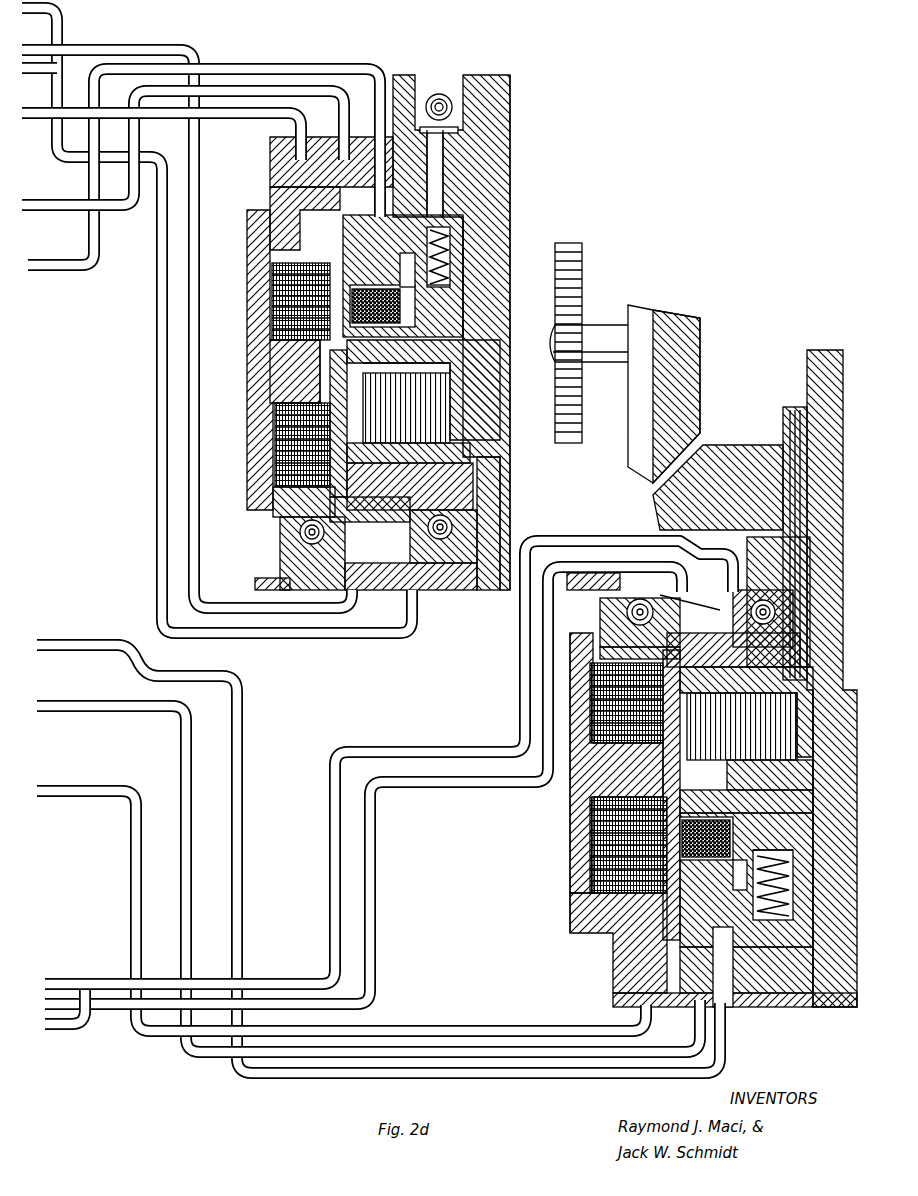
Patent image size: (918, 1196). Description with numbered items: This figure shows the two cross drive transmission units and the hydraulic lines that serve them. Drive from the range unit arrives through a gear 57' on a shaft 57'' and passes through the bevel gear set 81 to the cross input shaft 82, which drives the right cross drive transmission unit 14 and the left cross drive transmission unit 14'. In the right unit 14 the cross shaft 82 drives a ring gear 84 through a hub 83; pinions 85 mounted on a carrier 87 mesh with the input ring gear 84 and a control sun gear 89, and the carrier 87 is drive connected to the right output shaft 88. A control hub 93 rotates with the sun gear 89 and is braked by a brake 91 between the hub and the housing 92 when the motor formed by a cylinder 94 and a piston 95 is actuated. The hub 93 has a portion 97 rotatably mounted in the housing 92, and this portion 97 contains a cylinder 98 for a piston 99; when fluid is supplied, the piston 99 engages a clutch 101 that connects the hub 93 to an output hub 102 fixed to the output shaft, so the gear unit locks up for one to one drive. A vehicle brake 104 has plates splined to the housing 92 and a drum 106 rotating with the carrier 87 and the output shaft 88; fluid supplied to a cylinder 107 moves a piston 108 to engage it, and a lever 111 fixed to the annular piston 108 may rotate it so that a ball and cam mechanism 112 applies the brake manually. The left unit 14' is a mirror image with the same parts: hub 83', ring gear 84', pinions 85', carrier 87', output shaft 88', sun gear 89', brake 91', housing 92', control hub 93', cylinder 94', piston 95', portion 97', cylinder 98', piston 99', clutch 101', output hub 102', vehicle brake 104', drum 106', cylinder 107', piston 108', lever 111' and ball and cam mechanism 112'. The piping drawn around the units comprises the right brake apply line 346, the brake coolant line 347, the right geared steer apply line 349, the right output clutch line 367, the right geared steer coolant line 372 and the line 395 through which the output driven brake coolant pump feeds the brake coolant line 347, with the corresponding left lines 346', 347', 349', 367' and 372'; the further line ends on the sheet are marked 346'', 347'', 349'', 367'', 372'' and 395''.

The right cross drive transmission unit 14 is at (524, 332).
The left cross drive transmission unit 14' is at (542, 783).
The gear 57' is at (590, 321).
The shaft 57'' is at (593, 315).
The bevel gear set 81 is at (670, 310).
The cross input shaft 82 is at (490, 538).
The hub 83 is at (439, 486).
The hub 83' is at (767, 646).
The ring gear 84 is at (318, 423).
The ring gear 84' is at (646, 795).
The pinions 85 is at (445, 403).
The pinions 85' is at (765, 726).
The carrier 87 is at (441, 456).
The carrier 87' is at (829, 544).
The right output shaft 88 is at (498, 278).
The left output shaft 88' is at (785, 775).
The control sun gear 89 is at (437, 390).
The control sun gear 89' is at (761, 715).
The brake 91 is at (272, 301).
The brake 91' is at (597, 845).
The housing 92 is at (264, 360).
The housing 92' is at (595, 763).
The control hub 93 is at (300, 371).
The control hub 93' is at (761, 801).
The cylinder 94 is at (310, 162).
The cylinder 94' is at (713, 993).
The piston 95 is at (284, 216).
The piston 95' is at (618, 943).
The portion 97 is at (464, 332).
The portion 97' is at (825, 848).
The cylinder 98 is at (438, 271).
The cylinder 98' is at (761, 903).
The piston 99 is at (422, 158).
The piston 99' is at (728, 962).
The clutch 101 is at (376, 285).
The clutch 101' is at (669, 816).
The output hub 102 is at (485, 271).
The output hub 102' is at (803, 862).
The vehicle brake 104 is at (270, 445).
The vehicle brake 104' is at (574, 703).
The drum 106 is at (403, 543).
The drum 106' is at (640, 625).
The cylinder 107 is at (283, 553).
The cylinder 107' is at (726, 618).
The piston 108 is at (278, 510).
The piston 108' is at (581, 641).
The lever 111 is at (266, 622).
The lever 111' is at (584, 550).
The ball and cam mechanism 112 is at (278, 538).
The ball and cam mechanism 112' is at (605, 609).
The right brake apply line 346 is at (203, 339).
The left brake apply line 346' is at (615, 631).
The conduit 346'' is at (296, 915).
The brake coolant line 347 is at (252, 345).
The brake coolant line 347' is at (629, 615).
The conduit 347'' is at (285, 861).
The right geared steer apply line 349 is at (161, 143).
The left geared steer apply line 349' is at (93, 911).
The conduit 349'' is at (398, 1014).
The right output clutch line 367 is at (204, 161).
The left output clutch line 367' is at (144, 836).
The conduit 367'' is at (525, 1038).
The right geared steer coolant line 372 is at (183, 141).
The left geared steer coolant line 372' is at (118, 879).
The conduit 372'' is at (492, 1026).
The line 395 is at (217, 318).
The conduit 395'' is at (67, 1043).